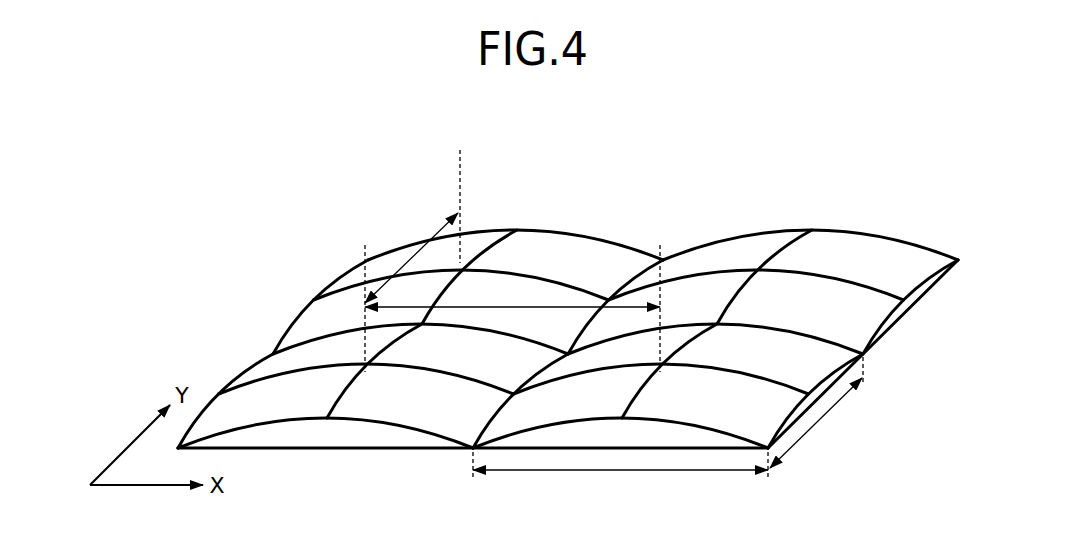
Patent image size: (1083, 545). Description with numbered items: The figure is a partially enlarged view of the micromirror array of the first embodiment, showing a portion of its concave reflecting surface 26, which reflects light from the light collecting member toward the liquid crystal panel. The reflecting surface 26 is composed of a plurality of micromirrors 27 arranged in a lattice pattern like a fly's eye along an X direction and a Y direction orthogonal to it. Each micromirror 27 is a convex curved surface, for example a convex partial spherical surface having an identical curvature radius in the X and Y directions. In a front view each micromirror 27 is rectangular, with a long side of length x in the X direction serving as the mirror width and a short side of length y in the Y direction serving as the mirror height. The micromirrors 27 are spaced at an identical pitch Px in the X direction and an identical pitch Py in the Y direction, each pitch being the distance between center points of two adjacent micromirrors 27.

The reflecting surface 26 is at (568, 282).
The micromirror 27 is at (755, 348).
The pitch in the X direction Px is at (527, 307).
The pitch in the Y direction Py is at (441, 229).
The length of the long side x is at (622, 472).
The length of the short side y is at (818, 423).